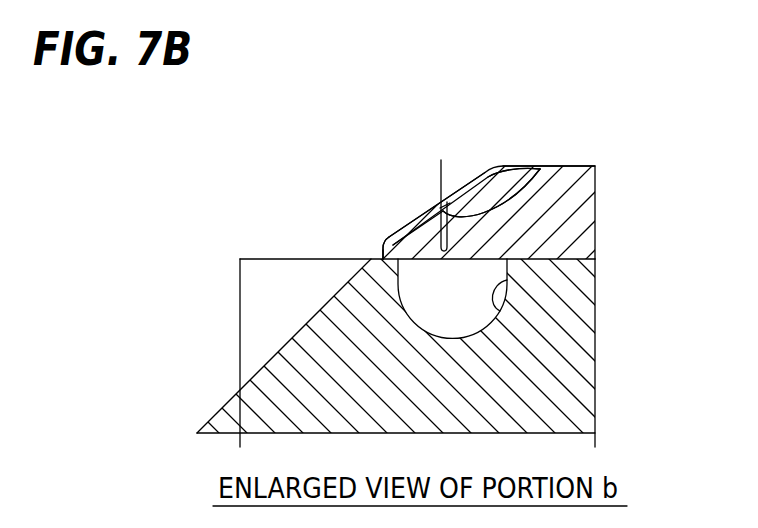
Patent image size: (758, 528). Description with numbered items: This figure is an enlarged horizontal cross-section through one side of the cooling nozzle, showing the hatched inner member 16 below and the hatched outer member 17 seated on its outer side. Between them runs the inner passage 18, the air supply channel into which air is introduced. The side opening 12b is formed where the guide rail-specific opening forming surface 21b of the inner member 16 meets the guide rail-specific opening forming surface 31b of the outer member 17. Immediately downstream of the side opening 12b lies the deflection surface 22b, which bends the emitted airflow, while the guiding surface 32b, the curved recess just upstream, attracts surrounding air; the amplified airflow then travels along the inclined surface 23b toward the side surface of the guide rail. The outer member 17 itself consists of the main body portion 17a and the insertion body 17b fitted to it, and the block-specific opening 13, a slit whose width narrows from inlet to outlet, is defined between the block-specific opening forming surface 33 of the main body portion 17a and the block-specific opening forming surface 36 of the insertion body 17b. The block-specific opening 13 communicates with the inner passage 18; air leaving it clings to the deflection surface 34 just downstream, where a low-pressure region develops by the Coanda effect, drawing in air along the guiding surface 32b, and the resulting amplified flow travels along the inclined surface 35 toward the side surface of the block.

The side opening 12b is at (438, 130).
The block-specific opening 13 is at (623, 93).
The inner member 16 is at (567, 351).
The outer member 17 is at (577, 197).
The main body portion 17a is at (576, 164).
The insertion body 17b is at (384, 240).
The inner passage 18 is at (508, 275).
The guide rail-specific opening forming surface 21b is at (407, 224).
The deflection surface 22b is at (383, 256).
The inclined surface 23b is at (303, 327).
The guide rail-specific opening forming surface 31b is at (394, 236).
The guiding surface 32b is at (415, 262).
The block-specific opening forming surface 33 is at (497, 203).
The deflection surface 34 is at (441, 160).
The inclined surface 35 is at (445, 207).
The block-specific opening forming surface 36 is at (543, 168).